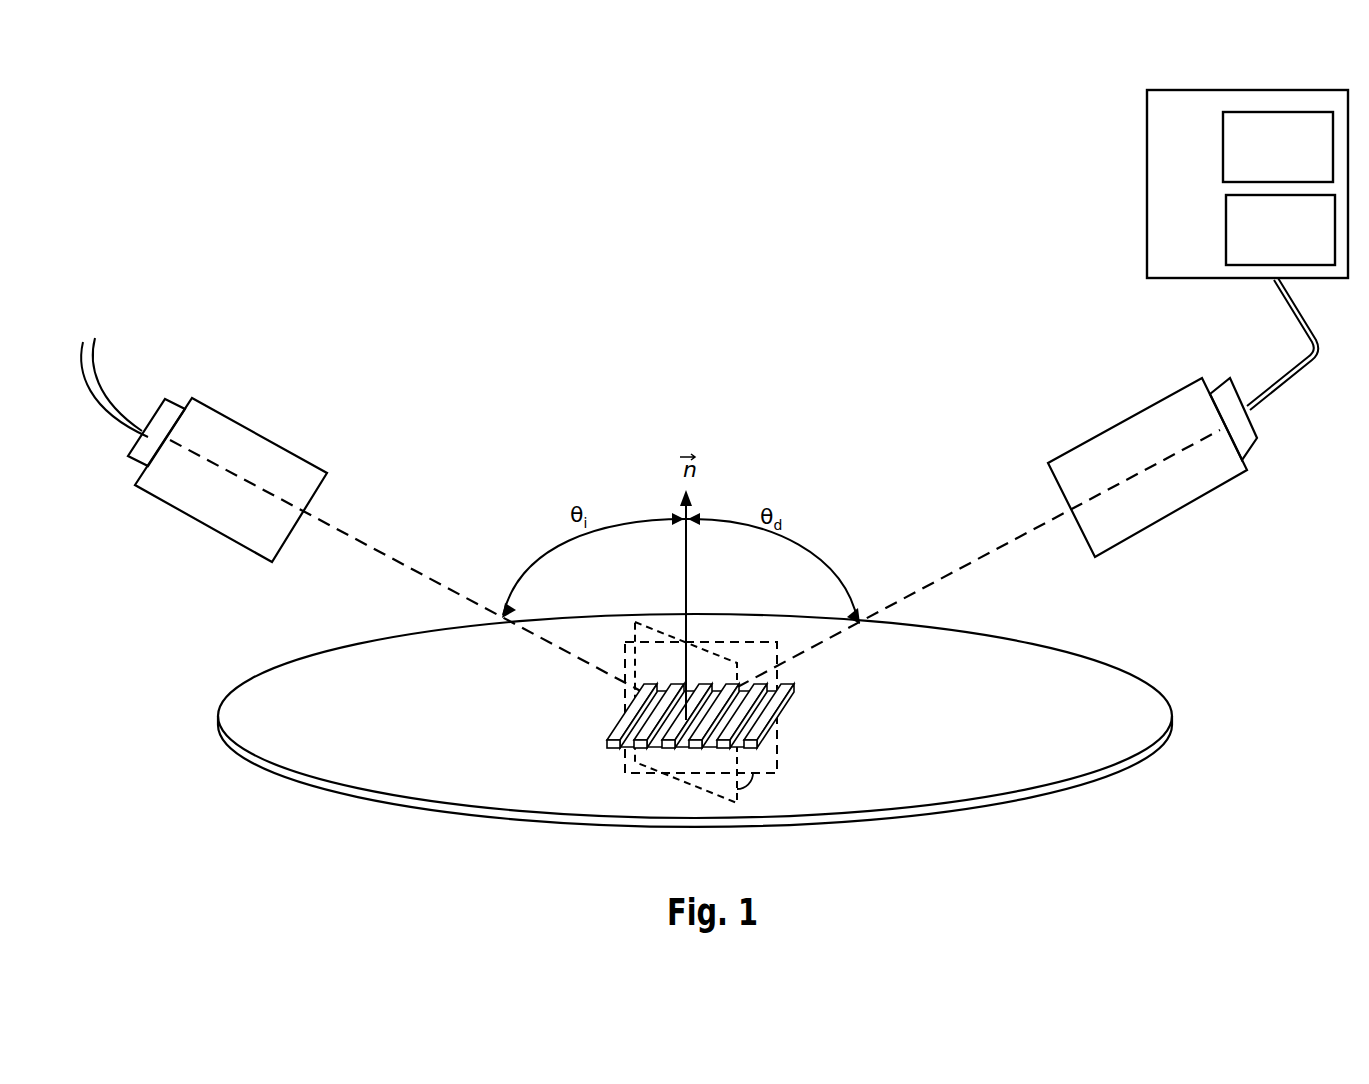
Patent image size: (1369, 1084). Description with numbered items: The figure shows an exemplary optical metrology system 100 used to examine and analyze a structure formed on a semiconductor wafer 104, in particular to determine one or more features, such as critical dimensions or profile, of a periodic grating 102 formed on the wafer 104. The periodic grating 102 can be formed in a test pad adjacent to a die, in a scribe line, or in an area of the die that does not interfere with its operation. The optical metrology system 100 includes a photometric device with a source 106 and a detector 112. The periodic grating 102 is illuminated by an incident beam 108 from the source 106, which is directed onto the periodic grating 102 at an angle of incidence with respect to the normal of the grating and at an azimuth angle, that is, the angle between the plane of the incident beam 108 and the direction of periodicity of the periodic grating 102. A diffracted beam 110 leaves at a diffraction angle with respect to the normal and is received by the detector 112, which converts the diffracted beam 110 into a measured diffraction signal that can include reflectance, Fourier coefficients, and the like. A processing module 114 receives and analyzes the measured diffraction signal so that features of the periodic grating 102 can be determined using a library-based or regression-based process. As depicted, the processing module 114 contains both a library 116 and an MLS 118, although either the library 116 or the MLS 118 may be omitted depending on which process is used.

The optical metrology system 100 is at (274, 225).
The periodic grating 102 is at (609, 765).
The semiconductor wafer 104 is at (298, 662).
The source 106 is at (238, 422).
The incident beam 108 is at (340, 532).
The diffracted beam 110 is at (977, 558).
The detector 112 is at (1250, 470).
The processing module 114 is at (1247, 184).
The library 116 is at (1280, 230).
The MLS 118 is at (1278, 147).